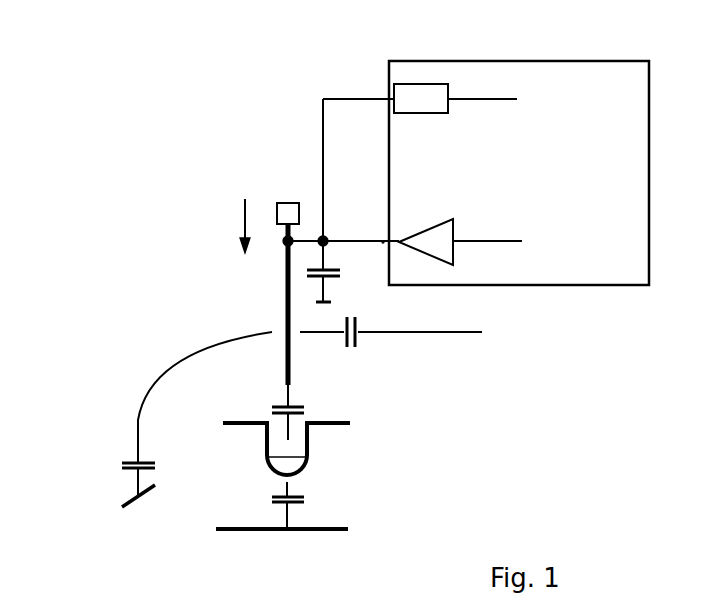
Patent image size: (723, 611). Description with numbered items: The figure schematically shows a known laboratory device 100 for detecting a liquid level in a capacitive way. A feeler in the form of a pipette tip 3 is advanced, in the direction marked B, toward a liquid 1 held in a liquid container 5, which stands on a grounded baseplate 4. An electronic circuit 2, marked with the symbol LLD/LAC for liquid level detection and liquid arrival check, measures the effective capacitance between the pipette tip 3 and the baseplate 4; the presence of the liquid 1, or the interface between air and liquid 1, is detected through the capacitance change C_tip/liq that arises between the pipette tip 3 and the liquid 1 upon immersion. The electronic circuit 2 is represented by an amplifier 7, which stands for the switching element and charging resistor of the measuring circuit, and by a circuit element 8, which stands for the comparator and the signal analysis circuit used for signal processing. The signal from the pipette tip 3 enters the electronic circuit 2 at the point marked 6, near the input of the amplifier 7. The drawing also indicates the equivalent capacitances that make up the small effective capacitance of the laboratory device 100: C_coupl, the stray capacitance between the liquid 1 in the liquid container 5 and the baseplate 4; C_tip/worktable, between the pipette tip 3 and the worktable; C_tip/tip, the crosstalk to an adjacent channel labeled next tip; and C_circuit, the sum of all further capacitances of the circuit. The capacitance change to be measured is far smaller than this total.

The laboratory device 100 is at (169, 152).
The liquid 1 is at (292, 463).
The electronic circuit 2 is at (633, 217).
The pipette tip 3 is at (283, 264).
The baseplate 4 is at (213, 530).
The liquid container 5 is at (263, 442).
The signal input point 6 is at (383, 228).
The amplifier 7 is at (440, 237).
The circuit element 8 is at (408, 84).